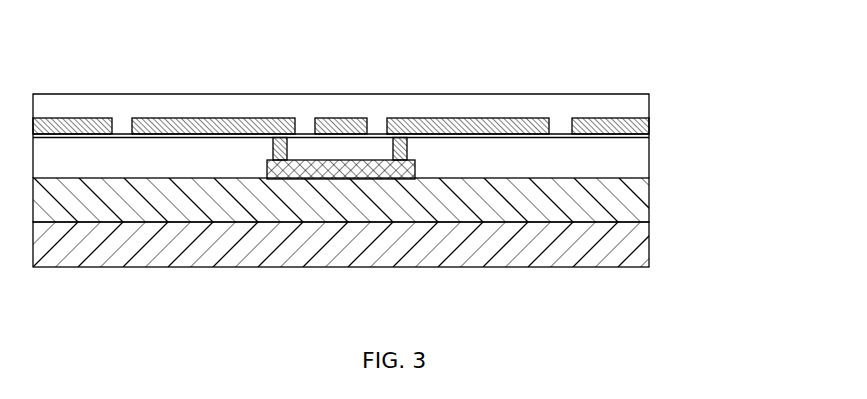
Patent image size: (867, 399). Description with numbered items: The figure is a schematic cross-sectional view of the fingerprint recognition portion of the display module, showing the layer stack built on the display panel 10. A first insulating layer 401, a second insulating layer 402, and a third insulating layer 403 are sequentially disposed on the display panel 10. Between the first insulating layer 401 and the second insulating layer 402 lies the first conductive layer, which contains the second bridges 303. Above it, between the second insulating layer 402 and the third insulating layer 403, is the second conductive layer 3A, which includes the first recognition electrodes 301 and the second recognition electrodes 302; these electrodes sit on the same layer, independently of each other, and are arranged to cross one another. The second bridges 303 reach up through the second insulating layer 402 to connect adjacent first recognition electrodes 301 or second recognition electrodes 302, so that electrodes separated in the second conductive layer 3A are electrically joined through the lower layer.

The display panel 10 is at (649, 250).
The first insulating layer 401 is at (649, 203).
The second insulating layer 402 is at (637, 148).
The third insulating layer 403 is at (637, 105).
The first recognition electrodes 301 is at (193, 118).
The second recognition electrodes 302 is at (343, 118).
The second bridges 303 is at (337, 165).
The second conductive layer 3A is at (518, 63).